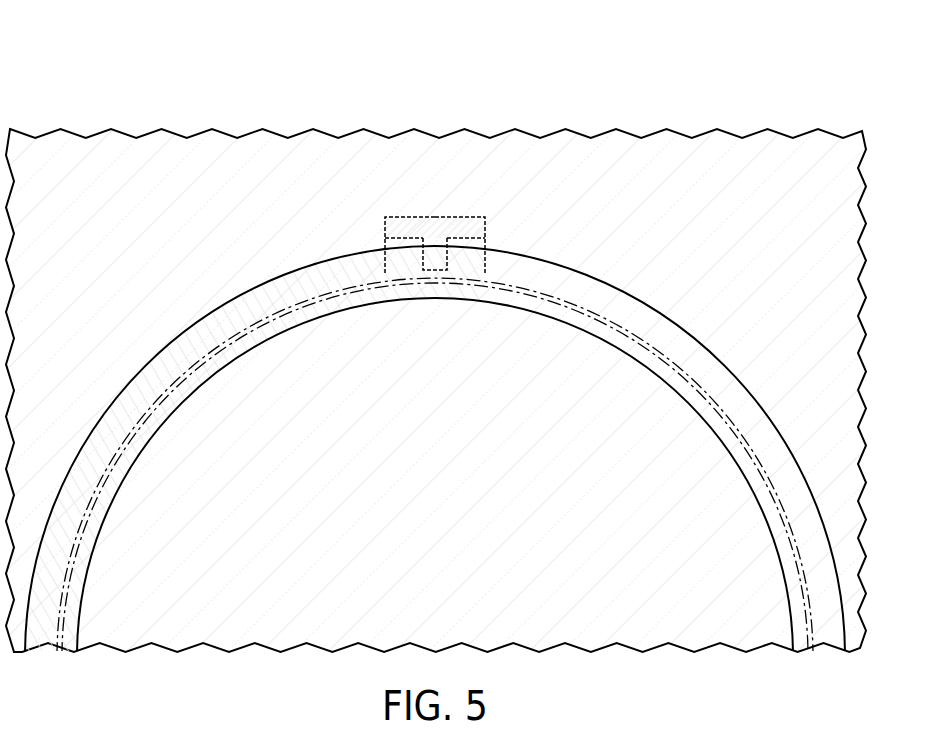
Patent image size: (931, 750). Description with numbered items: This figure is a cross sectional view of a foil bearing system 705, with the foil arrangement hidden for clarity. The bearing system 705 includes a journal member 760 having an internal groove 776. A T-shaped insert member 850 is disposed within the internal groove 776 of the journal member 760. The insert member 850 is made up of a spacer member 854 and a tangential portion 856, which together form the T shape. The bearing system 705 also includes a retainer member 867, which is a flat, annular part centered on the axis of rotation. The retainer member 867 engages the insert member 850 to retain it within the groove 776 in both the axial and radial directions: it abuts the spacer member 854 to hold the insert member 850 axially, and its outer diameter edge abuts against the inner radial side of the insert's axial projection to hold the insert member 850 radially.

The bearing system 705 is at (436, 336).
The journal member 760 is at (778, 147).
The retainer member 867 is at (629, 297).
The T-shaped insert member 850 is at (403, 244).
The tangential portion 856 is at (428, 231).
The internal groove 776 is at (465, 222).
The spacer member 854 is at (453, 260).